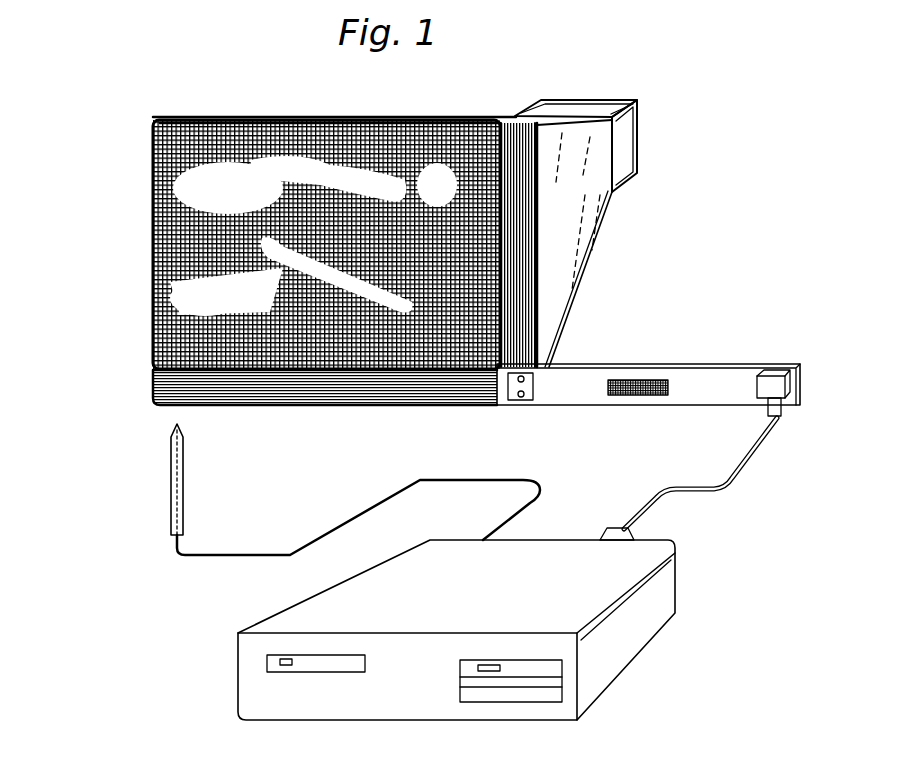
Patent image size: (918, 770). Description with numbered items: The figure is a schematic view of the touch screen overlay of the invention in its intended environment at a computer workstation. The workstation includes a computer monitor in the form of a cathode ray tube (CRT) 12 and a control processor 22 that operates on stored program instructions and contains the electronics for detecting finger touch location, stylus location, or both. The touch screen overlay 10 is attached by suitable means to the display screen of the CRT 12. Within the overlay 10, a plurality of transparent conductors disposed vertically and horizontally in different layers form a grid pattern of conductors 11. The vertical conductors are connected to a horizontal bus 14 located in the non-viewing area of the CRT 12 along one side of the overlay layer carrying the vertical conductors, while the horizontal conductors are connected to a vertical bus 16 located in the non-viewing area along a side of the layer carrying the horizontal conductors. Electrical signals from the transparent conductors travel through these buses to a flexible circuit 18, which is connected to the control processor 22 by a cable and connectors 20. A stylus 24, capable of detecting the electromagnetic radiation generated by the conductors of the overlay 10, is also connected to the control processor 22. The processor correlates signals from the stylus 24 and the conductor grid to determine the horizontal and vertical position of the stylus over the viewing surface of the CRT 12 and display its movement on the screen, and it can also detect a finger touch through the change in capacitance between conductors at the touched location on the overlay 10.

The touch screen overlay 10 is at (146, 209).
The grid pattern of conductors 11 is at (177, 321).
The cathode ray tube (CRT) 12 is at (593, 226).
The horizontal bus 14 is at (383, 383).
The vertical bus 16 is at (517, 333).
The flexible circuit 18 is at (693, 358).
The cable and connectors 20 is at (734, 458).
The control processor 22 is at (246, 685).
The stylus 24 is at (170, 480).